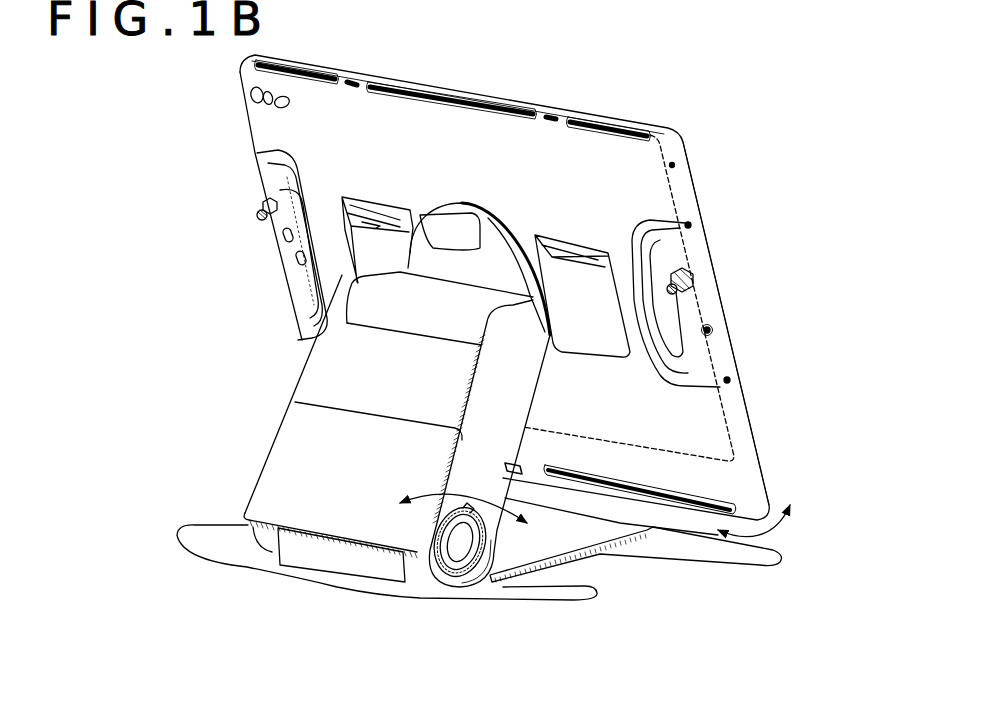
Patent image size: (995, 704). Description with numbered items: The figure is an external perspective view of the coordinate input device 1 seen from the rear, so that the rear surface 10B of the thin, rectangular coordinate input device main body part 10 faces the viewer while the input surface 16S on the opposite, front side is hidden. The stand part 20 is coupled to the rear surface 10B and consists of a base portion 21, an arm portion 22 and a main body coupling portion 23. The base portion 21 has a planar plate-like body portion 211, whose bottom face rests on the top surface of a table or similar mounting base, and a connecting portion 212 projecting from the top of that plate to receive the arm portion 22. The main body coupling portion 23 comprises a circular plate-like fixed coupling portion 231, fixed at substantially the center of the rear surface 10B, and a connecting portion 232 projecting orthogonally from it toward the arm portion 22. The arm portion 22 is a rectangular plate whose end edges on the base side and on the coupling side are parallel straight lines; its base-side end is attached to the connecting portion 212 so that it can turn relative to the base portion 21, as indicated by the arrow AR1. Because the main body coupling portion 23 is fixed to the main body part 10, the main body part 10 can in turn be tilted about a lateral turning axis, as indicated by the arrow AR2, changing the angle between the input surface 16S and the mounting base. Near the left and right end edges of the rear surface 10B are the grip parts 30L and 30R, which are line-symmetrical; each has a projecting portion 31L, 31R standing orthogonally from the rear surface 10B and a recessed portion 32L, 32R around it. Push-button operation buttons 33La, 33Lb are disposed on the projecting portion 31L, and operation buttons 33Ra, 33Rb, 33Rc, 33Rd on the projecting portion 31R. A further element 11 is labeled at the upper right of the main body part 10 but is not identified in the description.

The coordinate input device 1 is at (460, 271).
The coordinate input device main body part 10 is at (460, 295).
The rear surface 10B is at (617, 193).
The housing 11 is at (680, 167).
The input surface 16S is at (752, 419).
The stand part 20 is at (469, 443).
The base portion 21 is at (479, 492).
The plate-like body portion 211 is at (437, 590).
The connecting portion 212 is at (436, 646).
The arm portion 22 is at (332, 373).
The main body coupling portion 23 is at (354, 275).
The fixed coupling portion 231 is at (420, 262).
The connecting portion 232 is at (373, 307).
The grip part 30R is at (237, 232).
The grip part 30L is at (722, 286).
The projecting portion 31R is at (275, 250).
The projecting portion 31L is at (690, 347).
The recessed portion 32R is at (282, 180).
The recessed portion 32L is at (672, 243).
The operation button 33Ra is at (270, 198).
The operation button 33Rb is at (262, 210).
The operation button 33Rc is at (282, 238).
The operation button 33Rd is at (295, 257).
The operation button 33La is at (686, 267).
The operation button 33Lb is at (677, 288).
The arrow AR1 is at (497, 505).
The arrow AR2 is at (780, 535).